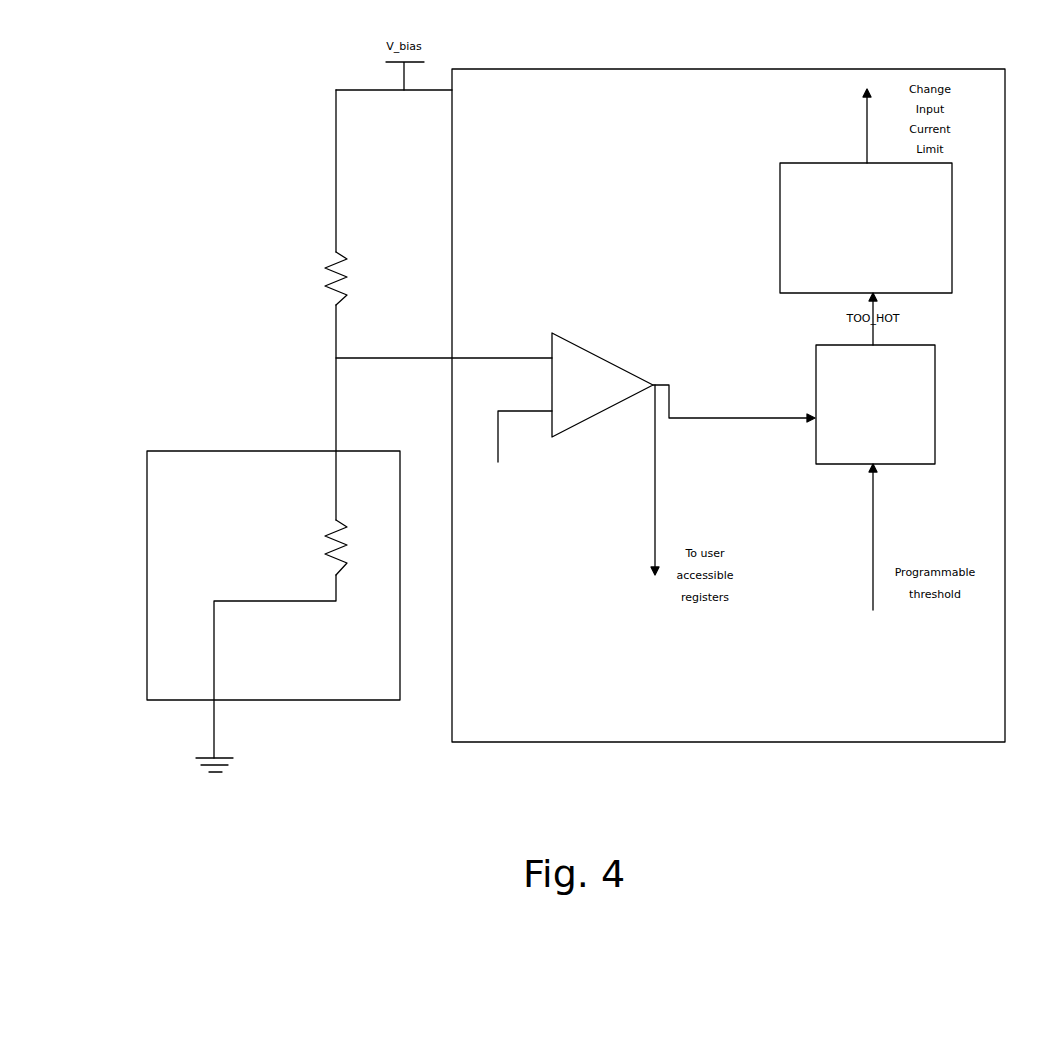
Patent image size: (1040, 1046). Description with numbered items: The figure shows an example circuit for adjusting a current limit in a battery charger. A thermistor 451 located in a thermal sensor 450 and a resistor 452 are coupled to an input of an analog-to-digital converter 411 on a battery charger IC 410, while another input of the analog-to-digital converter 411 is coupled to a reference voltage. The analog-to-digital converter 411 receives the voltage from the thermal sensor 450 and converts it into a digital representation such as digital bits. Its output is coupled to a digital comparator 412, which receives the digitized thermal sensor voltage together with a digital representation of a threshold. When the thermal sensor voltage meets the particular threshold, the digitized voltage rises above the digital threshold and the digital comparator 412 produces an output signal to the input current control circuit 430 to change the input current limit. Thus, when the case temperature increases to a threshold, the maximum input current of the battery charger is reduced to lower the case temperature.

The battery charger IC 410 is at (700, 69).
The analog-to-digital converter (ADC) 411 is at (556, 333).
The digital comparator 412 is at (815, 465).
The input current control circuit 430 is at (812, 163).
The thermal sensor 450 is at (157, 451).
The thermistor 451 is at (340, 532).
The resistor 452 is at (350, 270).